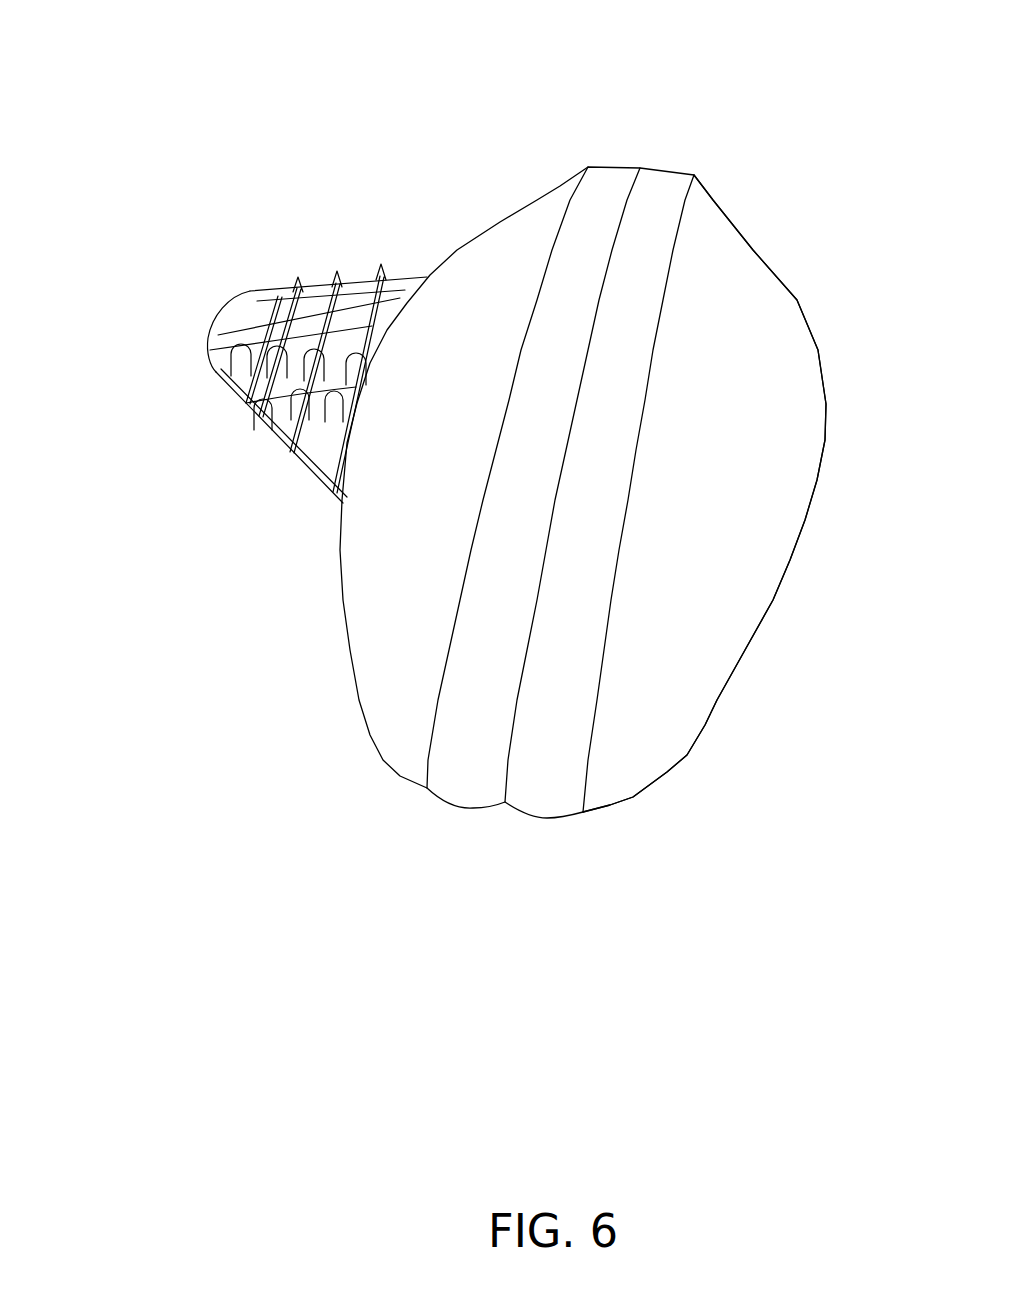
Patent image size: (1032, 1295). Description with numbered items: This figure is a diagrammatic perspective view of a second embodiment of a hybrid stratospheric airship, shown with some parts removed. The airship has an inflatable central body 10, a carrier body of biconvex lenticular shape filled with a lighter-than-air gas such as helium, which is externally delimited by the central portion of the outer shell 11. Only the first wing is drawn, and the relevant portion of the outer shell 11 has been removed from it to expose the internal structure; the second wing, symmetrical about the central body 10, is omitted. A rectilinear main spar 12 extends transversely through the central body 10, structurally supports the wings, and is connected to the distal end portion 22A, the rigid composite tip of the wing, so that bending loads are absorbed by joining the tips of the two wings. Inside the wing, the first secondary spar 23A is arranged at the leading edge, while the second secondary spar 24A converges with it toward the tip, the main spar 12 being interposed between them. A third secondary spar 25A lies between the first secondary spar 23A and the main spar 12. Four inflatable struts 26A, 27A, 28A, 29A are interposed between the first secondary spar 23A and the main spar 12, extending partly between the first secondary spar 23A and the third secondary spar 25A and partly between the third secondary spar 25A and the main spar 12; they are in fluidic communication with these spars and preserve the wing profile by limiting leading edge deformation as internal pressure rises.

The central body 10 is at (556, 197).
The outer shell 11 is at (717, 341).
The main spar 12 is at (250, 349).
The distal end portion 22A is at (204, 338).
The first secondary spar 23A is at (270, 430).
The second secondary spar 24A is at (316, 291).
The third secondary spar 25A is at (240, 377).
The strut 26A is at (336, 462).
The strut 27A is at (302, 417).
The strut 28A is at (273, 397).
The strut 29A is at (237, 373).